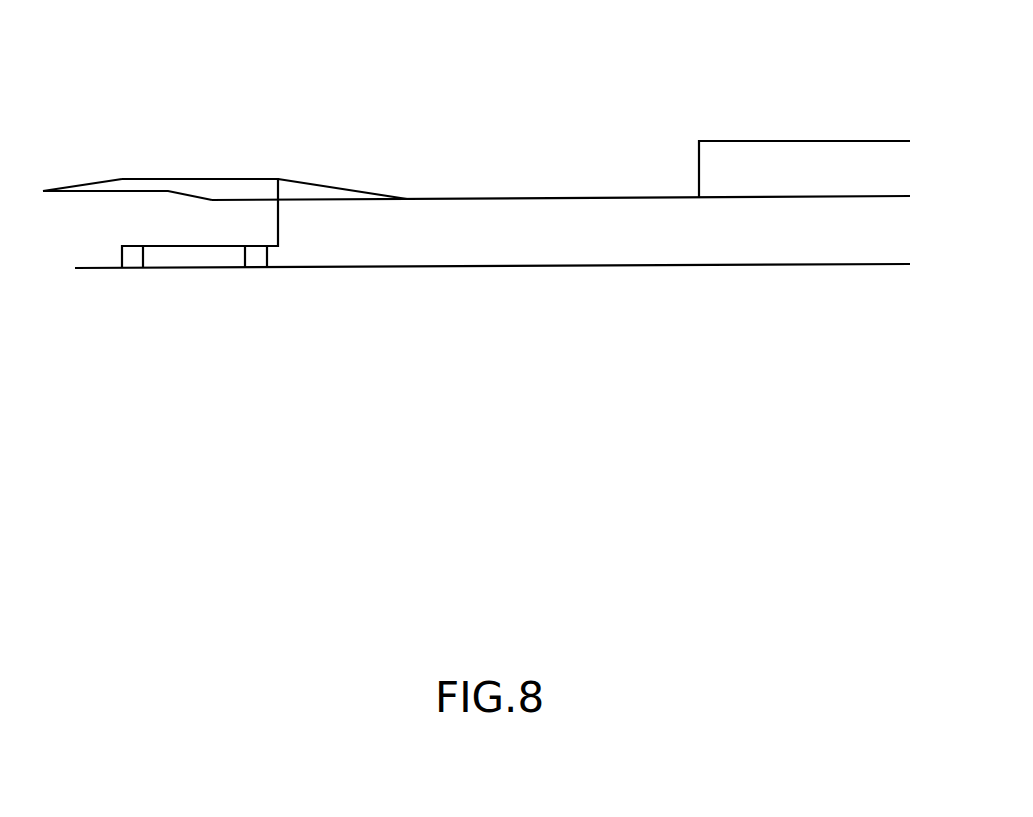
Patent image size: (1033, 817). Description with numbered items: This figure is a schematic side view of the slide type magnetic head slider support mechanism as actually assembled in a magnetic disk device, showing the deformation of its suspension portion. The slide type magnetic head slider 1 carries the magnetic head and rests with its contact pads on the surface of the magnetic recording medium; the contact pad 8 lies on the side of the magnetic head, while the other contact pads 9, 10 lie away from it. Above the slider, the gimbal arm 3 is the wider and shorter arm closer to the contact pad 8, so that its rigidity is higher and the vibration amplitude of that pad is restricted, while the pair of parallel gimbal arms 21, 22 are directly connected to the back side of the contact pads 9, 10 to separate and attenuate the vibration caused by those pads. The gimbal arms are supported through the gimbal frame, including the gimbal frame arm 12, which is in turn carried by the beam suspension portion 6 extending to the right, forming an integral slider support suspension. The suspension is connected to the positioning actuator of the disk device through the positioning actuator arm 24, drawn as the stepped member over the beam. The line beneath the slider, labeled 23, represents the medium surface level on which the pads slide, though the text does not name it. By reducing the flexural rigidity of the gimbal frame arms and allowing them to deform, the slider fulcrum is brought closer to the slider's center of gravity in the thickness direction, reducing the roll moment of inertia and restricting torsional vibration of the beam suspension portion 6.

The slide type magnetic head slider 1 is at (192, 228).
The gimbal arm 3 is at (78, 186).
The beam suspension portion 6 is at (540, 197).
The contact pad 8 is at (128, 262).
The contact pad 9 is at (304, 253).
The contact pad 10 is at (260, 257).
The gimbal frame arm 12 is at (196, 195).
The gimbal arm 21 is at (342, 140).
The gimbal arm 22 is at (341, 187).
The insulating substrate 23 is at (575, 266).
The positioning actuator arm 24 is at (820, 141).